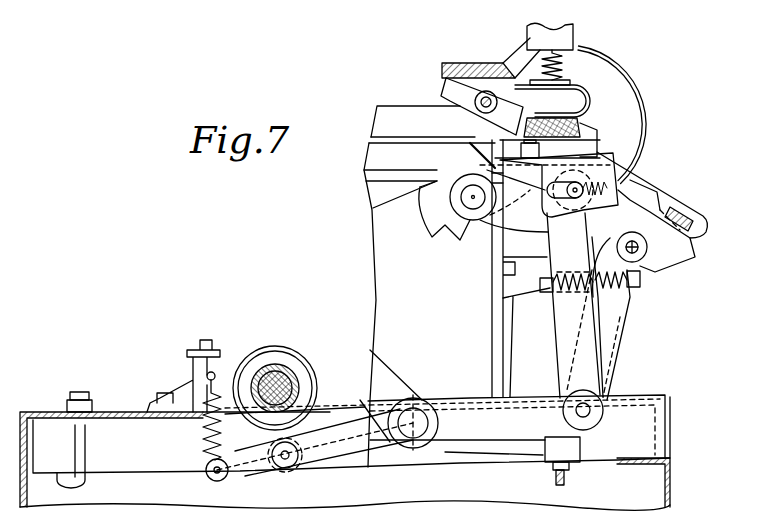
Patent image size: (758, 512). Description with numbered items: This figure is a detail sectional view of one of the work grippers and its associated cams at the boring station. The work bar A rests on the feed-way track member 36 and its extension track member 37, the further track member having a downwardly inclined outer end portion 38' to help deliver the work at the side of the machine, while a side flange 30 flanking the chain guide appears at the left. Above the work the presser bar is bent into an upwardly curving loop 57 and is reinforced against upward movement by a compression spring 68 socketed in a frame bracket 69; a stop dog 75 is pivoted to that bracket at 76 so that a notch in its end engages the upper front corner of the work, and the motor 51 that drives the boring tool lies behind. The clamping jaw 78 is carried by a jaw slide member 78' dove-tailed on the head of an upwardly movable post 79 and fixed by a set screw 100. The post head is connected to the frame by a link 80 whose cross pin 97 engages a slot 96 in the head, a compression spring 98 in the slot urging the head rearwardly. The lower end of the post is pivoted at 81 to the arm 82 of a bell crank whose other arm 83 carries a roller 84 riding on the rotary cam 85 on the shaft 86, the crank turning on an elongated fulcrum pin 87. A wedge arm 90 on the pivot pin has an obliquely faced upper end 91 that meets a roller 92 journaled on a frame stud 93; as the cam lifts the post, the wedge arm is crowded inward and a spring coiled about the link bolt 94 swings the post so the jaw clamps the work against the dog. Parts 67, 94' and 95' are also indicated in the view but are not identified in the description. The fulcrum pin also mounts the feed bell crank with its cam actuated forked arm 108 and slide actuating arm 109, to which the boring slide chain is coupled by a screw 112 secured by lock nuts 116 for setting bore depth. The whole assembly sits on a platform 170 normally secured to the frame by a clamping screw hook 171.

The side flange 30 is at (468, 237).
The feed-way track member 36 is at (455, 303).
The extension track member 37 is at (475, 130).
The downwardly inclined outer end portion 38' is at (657, 212).
The motor 51 is at (622, 72).
The upwardly curving loop 57 is at (592, 100).
The block 67 is at (415, 121).
The compression spring 68 is at (565, 70).
The frame bracket 69 is at (575, 33).
The stop dog 75 is at (482, 106).
The pivot 76 is at (486, 97).
The clamping jaw 78 is at (602, 138).
The jaw slide member 78' is at (545, 154).
The work bar A is at (580, 122).
The post 79 is at (573, 305).
The link 80 is at (490, 197).
The pivot pin 81 is at (590, 410).
The bell crank arm 82 is at (445, 426).
The bell crank arm 83 is at (309, 445).
The roller 84 is at (290, 470).
The rotary cam 85 is at (308, 374).
The shaft 86 is at (281, 377).
The fulcrum pin 87 is at (416, 448).
The wedge arm 90 is at (611, 318).
The obliquely faced upper end 91 is at (607, 241).
The roller 92 is at (648, 250).
The frame stud 93 is at (639, 245).
The link bolt 94 is at (528, 337).
The spring 94' is at (645, 284).
The spring 95' is at (573, 297).
The slot 96 is at (560, 195).
The cross pin 97 is at (577, 203).
The compression spring 98 is at (640, 147).
The set screw 100 is at (540, 180).
The forked arm 108 is at (391, 396).
The slide actuating arm 109 is at (576, 450).
The screw 112 is at (556, 476).
The lock nut 116 is at (570, 466).
The platform 170 is at (120, 408).
The clamping screw hook 171 is at (86, 450).